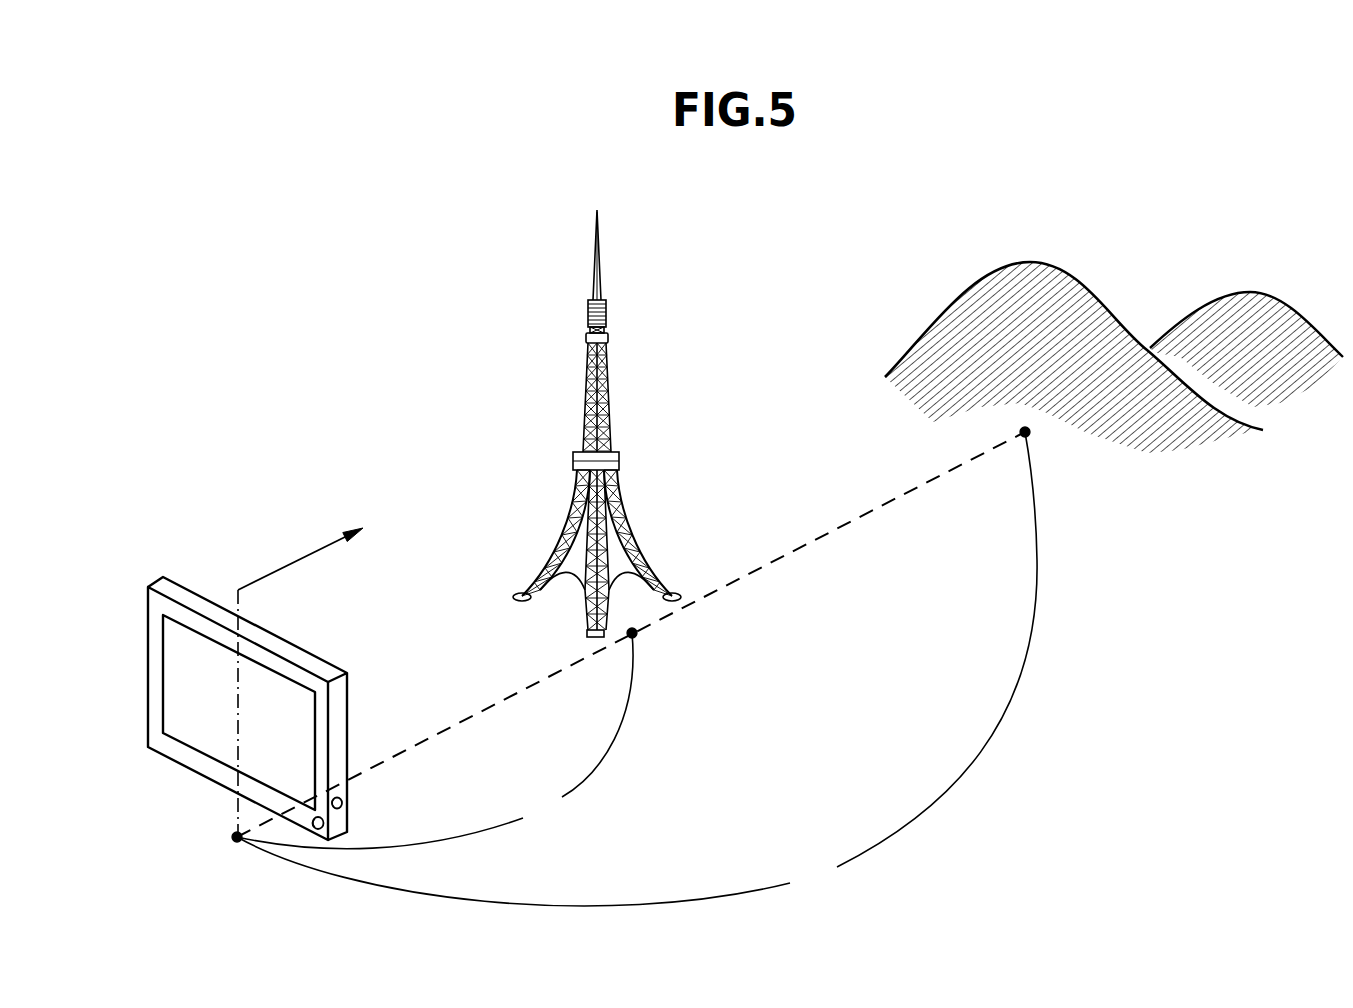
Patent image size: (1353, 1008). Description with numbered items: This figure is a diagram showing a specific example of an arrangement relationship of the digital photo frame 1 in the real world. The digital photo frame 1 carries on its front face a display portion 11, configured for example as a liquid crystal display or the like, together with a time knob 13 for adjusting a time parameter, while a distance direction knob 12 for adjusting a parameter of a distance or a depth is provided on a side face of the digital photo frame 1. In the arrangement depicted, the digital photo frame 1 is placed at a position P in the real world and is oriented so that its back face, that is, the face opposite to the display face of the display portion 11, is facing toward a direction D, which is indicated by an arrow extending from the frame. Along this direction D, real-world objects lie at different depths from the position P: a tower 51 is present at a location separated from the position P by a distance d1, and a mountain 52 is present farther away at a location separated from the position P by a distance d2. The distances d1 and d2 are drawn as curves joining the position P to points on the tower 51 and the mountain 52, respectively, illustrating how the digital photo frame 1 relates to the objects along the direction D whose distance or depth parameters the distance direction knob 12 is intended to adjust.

The digital photo frame 1 is at (159, 586).
The display portion 11 is at (207, 730).
The distance direction knob 12 is at (345, 807).
The time knob 13 is at (316, 828).
The tower 51 is at (614, 444).
The mountain 52 is at (1088, 310).
The direction D is at (298, 561).
The position P is at (619, 649).
The distance d1 is at (437, 738).
The distance d2 is at (637, 666).